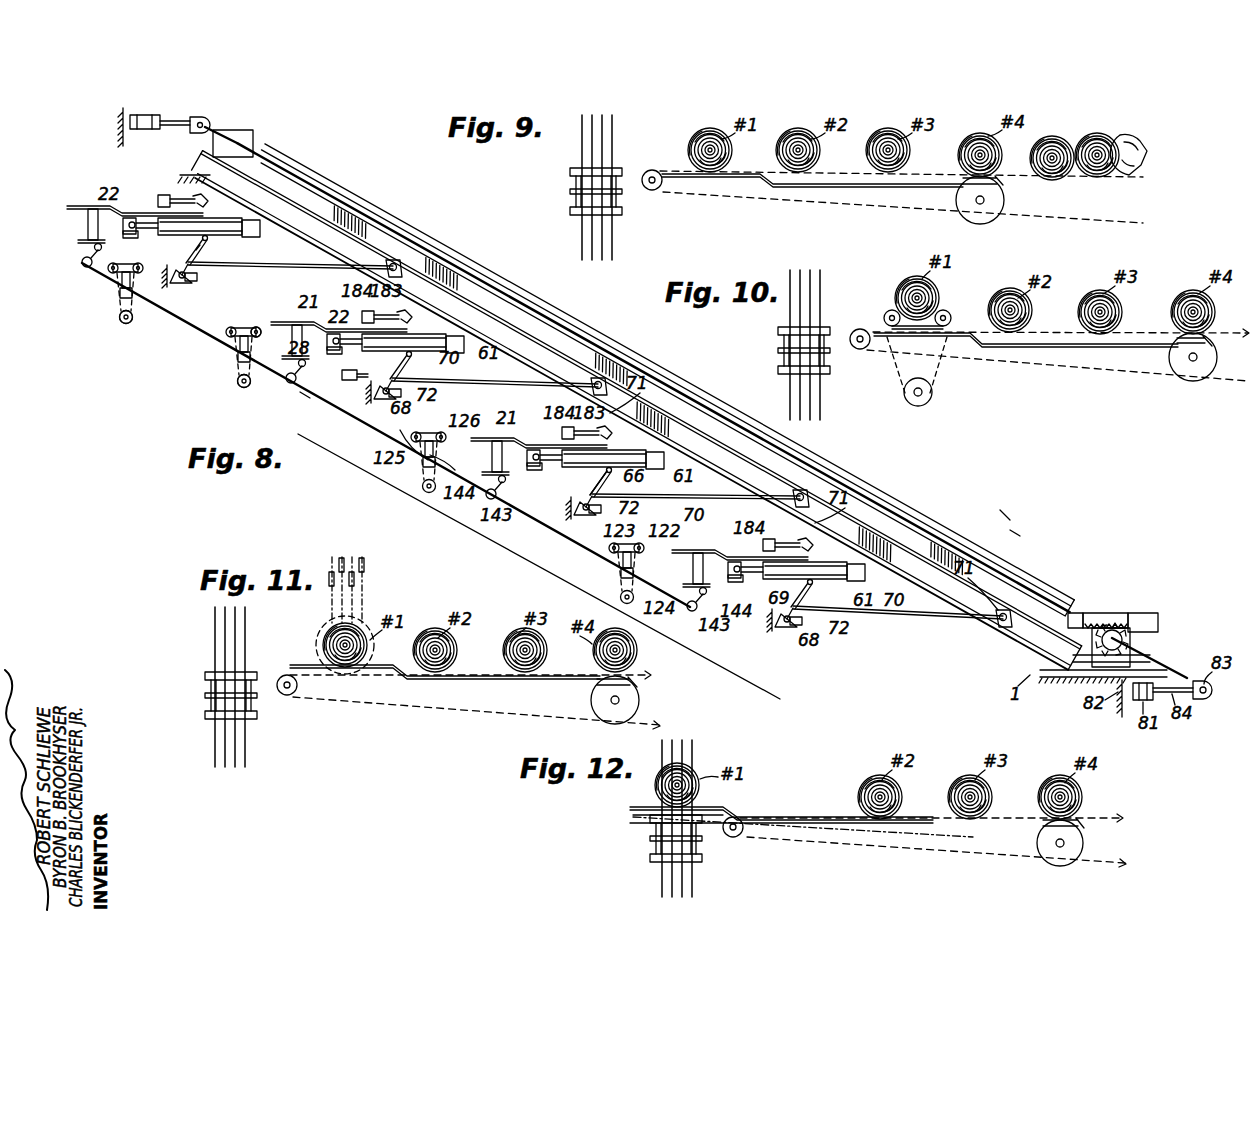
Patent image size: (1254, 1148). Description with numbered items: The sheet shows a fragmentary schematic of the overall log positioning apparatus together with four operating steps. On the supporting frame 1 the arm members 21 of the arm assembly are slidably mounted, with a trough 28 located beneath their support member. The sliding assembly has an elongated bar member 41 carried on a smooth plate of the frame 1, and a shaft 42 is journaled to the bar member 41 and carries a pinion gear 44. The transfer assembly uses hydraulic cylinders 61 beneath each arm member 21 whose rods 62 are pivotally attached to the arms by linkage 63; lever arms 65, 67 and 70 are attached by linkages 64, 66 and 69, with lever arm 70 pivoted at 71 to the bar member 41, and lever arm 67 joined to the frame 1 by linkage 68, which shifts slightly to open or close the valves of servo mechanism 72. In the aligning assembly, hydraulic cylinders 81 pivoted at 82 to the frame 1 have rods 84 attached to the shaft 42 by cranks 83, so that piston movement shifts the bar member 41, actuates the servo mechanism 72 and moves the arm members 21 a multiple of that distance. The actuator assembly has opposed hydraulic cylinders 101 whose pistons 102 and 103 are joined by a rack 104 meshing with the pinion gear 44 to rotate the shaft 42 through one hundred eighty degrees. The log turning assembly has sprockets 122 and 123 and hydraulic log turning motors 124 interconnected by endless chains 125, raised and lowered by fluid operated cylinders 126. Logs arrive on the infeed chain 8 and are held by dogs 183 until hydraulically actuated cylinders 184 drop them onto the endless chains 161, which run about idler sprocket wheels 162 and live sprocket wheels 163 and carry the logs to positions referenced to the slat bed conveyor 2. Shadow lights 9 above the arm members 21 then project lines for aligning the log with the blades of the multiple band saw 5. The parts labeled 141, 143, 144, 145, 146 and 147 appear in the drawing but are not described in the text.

In FIG. 8, the supporting frame 1 is at (188, 174).
In FIG. 9, the slat bed conveyor 2 is at (577, 192).
In FIG. 10, the slat bed conveyor 2 is at (785, 350).
In FIG. 11, the slat bed conveyor 2 is at (258, 673).
In FIG. 12, the slat bed conveyor 2 is at (657, 841).
In FIG. 9, the multiple band saw 5 is at (618, 135).
In FIG. 10, the multiple band saw 5 is at (826, 296).
In FIG. 11, the multiple band saw 5 is at (252, 628).
In FIG. 12, the multiple band saw 5 is at (695, 762).
In FIG. 9, the infeed chain 8 is at (901, 198).
In FIG. 10, the infeed chain 8 is at (1234, 395).
In FIG. 12, the infeed chain 8 is at (1095, 868).
In FIG. 11, the shadow lights 9 is at (348, 552).
In FIG. 8, the arm members 21 is at (95, 206).
In FIG. 9, the arm members 21 is at (918, 182).
In FIG. 10, the arm members 21 is at (1125, 356).
In FIG. 11, the arm members 21 is at (472, 677).
In FIG. 12, the arm members 21 is at (632, 810).
In FIG. 8, the trough 28 is at (88, 220).
In FIG. 8, the elongated bar member 41 is at (913, 520).
In FIG. 8, the shaft 42 is at (937, 540).
In FIG. 8, the pinion gear 44 is at (1130, 636).
In FIG. 8, the hydraulic cylinders 61 is at (260, 236).
In FIG. 8, the rods 62 is at (210, 220).
In FIG. 8, the linkage 63 is at (123, 225).
In FIG. 8, the linkage 64 is at (148, 232).
In FIG. 8, the lever arm 65 is at (590, 482).
In FIG. 8, the linkage 66 is at (209, 239).
In FIG. 8, the lever arm 67 is at (208, 252).
In FIG. 8, the linkage 68 is at (190, 278).
In FIG. 8, the linkage 69 is at (194, 252).
In FIG. 8, the lever arm 70 is at (302, 266).
In FIG. 8, the pivot 71 is at (398, 260).
In FIG. 8, the servo mechanism 72 is at (198, 275).
In FIG. 8, the hydraulic cylinders 81 is at (148, 115).
In FIG. 8, the pivot 82 is at (126, 125).
In FIG. 8, the cranks 83 is at (216, 122).
In FIG. 8, the rods 84 is at (186, 120).
In FIG. 8, the hydraulic cylinders 101 is at (1144, 614).
In FIG. 8, the piston 102 is at (1074, 612).
In FIG. 8, the piston 103 is at (1122, 612).
In FIG. 8, the rack 104 is at (1113, 625).
In FIG. 8, the sprocket 122 is at (260, 326).
In FIG. 10, the sprocket 122 is at (948, 315).
In FIG. 8, the sprocket 123 is at (231, 326).
In FIG. 10, the sprocket 123 is at (884, 316).
In FIG. 8, the log turning motors 124 is at (250, 388).
In FIG. 10, the log turning motors 124 is at (925, 404).
In FIG. 8, the endless chains 125 is at (120, 322).
In FIG. 10, the endless chains 125 is at (938, 379).
In FIG. 8, the fluid operated cylinders 126 is at (145, 300).
In FIG. 8, the floor line 141 is at (358, 458).
In FIG. 8, the chain hook 143 is at (84, 266).
In FIG. 8, the guide roller 144 is at (93, 248).
In FIG. 8, the chain link 145 is at (308, 398).
In FIG. 8, the actuator 146 is at (342, 373).
In FIG. 8, the actuator rod 147 is at (372, 378).
In FIG. 10, the endless chains 161 is at (1044, 376).
In FIG. 11, the endless chains 161 is at (412, 720).
In FIG. 12, the endless chains 161 is at (944, 863).
In FIG. 9, the idler sprocket wheels 162 is at (657, 188).
In FIG. 10, the idler sprocket wheels 162 is at (862, 349).
In FIG. 11, the idler sprocket wheels 162 is at (640, 703).
In FIG. 12, the idler sprocket wheels 162 is at (734, 837).
In FIG. 9, the live sprocket wheels 163 is at (979, 220).
In FIG. 10, the live sprocket wheels 163 is at (1189, 378).
In FIG. 11, the live sprocket wheels 163 is at (300, 694).
In FIG. 12, the live sprocket wheels 163 is at (1084, 850).
In FIG. 8, the dogs 183 is at (196, 198).
In FIG. 9, the dogs 183 is at (1003, 188).
In FIG. 10, the dogs 183 is at (1213, 343).
In FIG. 11, the dogs 183 is at (636, 684).
In FIG. 12, the dogs 183 is at (1084, 826).
In FIG. 8, the hydraulically actuated cylinders 184 is at (160, 196).